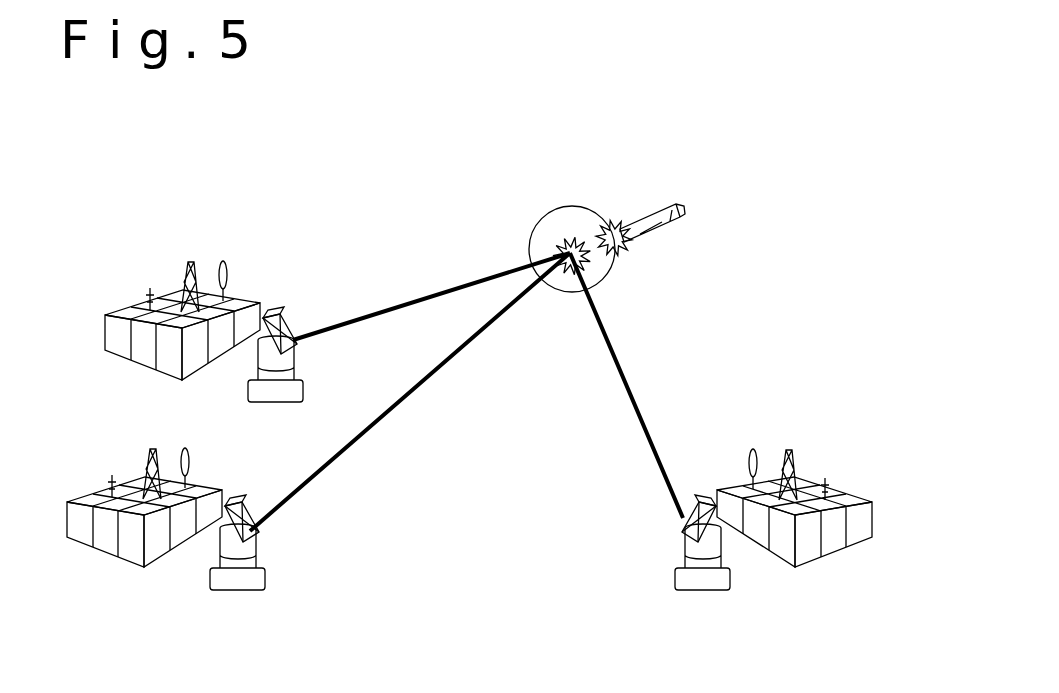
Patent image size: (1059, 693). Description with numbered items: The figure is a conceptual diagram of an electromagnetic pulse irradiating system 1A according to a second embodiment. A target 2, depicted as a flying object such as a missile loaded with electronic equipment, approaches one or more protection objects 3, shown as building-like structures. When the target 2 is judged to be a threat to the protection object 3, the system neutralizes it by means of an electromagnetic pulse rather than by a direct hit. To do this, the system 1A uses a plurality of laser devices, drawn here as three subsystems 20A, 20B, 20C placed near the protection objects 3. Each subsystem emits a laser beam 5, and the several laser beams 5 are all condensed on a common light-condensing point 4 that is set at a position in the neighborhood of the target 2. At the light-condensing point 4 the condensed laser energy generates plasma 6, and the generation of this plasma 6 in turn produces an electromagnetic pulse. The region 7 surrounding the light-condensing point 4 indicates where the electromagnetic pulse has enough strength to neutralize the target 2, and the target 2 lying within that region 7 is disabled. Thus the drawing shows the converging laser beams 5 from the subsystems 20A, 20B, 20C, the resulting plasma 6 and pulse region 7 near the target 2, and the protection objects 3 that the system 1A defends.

The electromagnetic pulse irradiating system 1A is at (312, 574).
The target 2 is at (665, 238).
The protection object 3 is at (857, 497).
The light-condensing point 4 is at (578, 273).
The laser beam 5 is at (653, 362).
The plasma 6 is at (535, 227).
The region 7 is at (568, 213).
The subsystem 20A is at (252, 586).
The subsystem 20B is at (297, 400).
The subsystem 20C is at (688, 586).